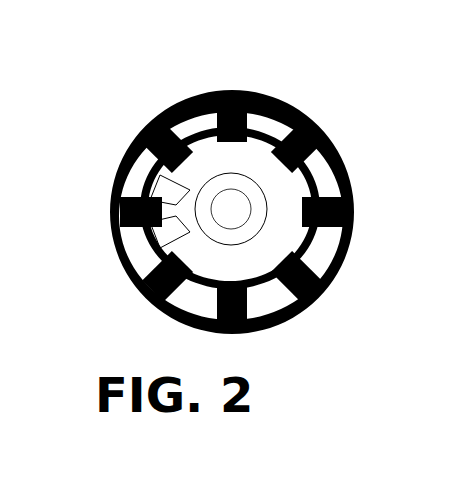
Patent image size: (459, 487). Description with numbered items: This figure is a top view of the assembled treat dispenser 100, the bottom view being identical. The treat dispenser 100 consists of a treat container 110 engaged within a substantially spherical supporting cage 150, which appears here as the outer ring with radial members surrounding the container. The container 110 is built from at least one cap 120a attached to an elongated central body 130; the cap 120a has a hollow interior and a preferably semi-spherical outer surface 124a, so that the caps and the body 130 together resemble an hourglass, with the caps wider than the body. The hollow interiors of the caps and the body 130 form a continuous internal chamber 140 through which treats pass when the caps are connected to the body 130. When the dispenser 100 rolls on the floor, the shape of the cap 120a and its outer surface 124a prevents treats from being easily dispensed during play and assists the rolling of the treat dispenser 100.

The treat dispenser 100 is at (229, 174).
The treat container 110 is at (253, 158).
The cap 120a is at (173, 185).
The outer surface 124a is at (167, 237).
The elongated central body 130 is at (230, 207).
The continuous internal chamber 140 is at (218, 222).
The supporting cage 150 is at (227, 92).